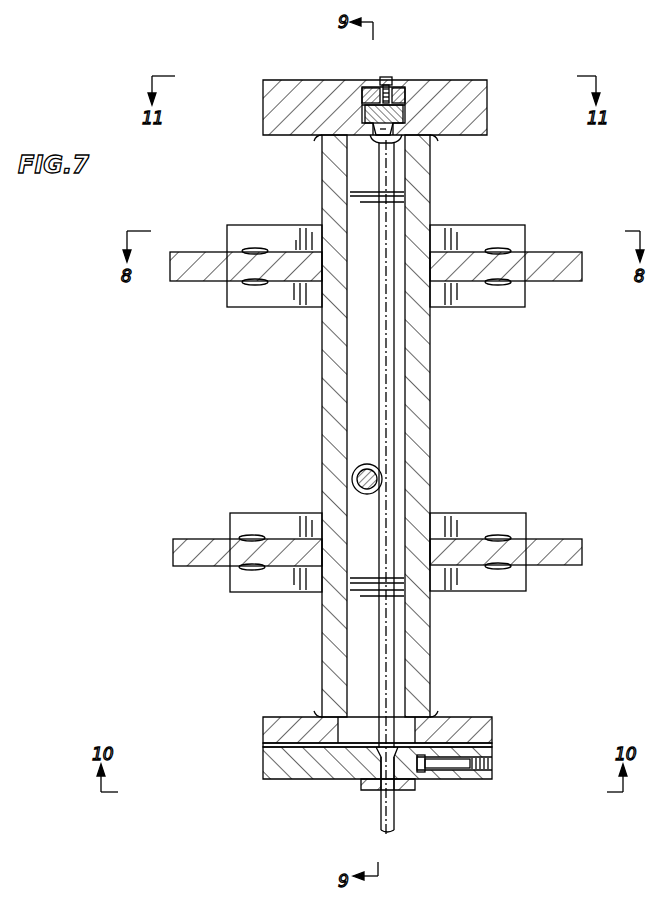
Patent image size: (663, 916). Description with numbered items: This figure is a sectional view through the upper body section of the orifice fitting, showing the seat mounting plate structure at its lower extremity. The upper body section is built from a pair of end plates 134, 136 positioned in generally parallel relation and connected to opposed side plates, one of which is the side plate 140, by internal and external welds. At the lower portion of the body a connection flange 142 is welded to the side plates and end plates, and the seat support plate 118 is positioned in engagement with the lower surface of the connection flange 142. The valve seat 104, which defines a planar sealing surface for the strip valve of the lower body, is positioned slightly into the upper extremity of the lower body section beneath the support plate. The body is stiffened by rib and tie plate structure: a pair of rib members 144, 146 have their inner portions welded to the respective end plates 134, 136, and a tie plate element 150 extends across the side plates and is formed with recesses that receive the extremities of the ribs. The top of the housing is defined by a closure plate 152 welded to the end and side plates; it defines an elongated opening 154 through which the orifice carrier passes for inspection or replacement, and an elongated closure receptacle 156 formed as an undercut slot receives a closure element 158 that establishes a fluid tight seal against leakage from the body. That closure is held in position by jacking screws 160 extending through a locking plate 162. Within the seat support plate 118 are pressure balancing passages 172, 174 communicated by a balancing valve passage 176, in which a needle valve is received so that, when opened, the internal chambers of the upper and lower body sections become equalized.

The valve seat 104 is at (365, 790).
The seat support plate 118 is at (262, 769).
The end plate 134 is at (330, 392).
The end plate 136 is at (420, 382).
The side plate 140 is at (404, 640).
The connection flange 142 is at (494, 719).
The rib member 144 is at (196, 540).
The rib member 146 is at (578, 549).
The tie plate element 150 is at (487, 517).
The closure plate 152 is at (478, 111).
The elongated opening 154 is at (378, 136).
The closure receptacle 156 is at (403, 114).
The bolt 158 is at (408, 116).
The jacking screw 160 is at (385, 77).
The locking plate 162 is at (366, 88).
The pressure balancing passage 172 is at (425, 779).
The pressure balancing passage 174 is at (443, 752).
The balancing valve passage 176 is at (465, 778).